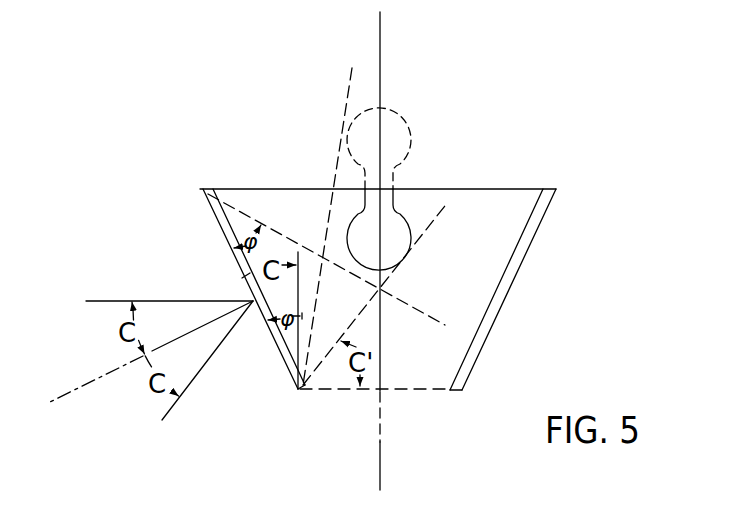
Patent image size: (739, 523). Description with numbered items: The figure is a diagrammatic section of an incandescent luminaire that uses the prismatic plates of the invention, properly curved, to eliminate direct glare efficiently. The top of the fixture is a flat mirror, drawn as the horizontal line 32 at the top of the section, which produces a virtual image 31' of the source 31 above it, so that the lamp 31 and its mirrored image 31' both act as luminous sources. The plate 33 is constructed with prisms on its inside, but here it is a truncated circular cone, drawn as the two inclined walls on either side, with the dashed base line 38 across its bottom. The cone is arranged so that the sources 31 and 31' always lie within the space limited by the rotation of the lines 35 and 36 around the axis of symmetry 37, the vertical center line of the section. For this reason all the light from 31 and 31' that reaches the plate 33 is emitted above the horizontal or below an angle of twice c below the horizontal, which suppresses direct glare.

The source 31 is at (395, 229).
The virtual image of the source 31' is at (385, 133).
The top edge of plate 32 is at (495, 187).
The plate 33 is at (251, 299).
The line 35 is at (342, 116).
The line 36 is at (293, 207).
The axis of symmetry 37 is at (408, 31).
The base line 38 is at (432, 381).